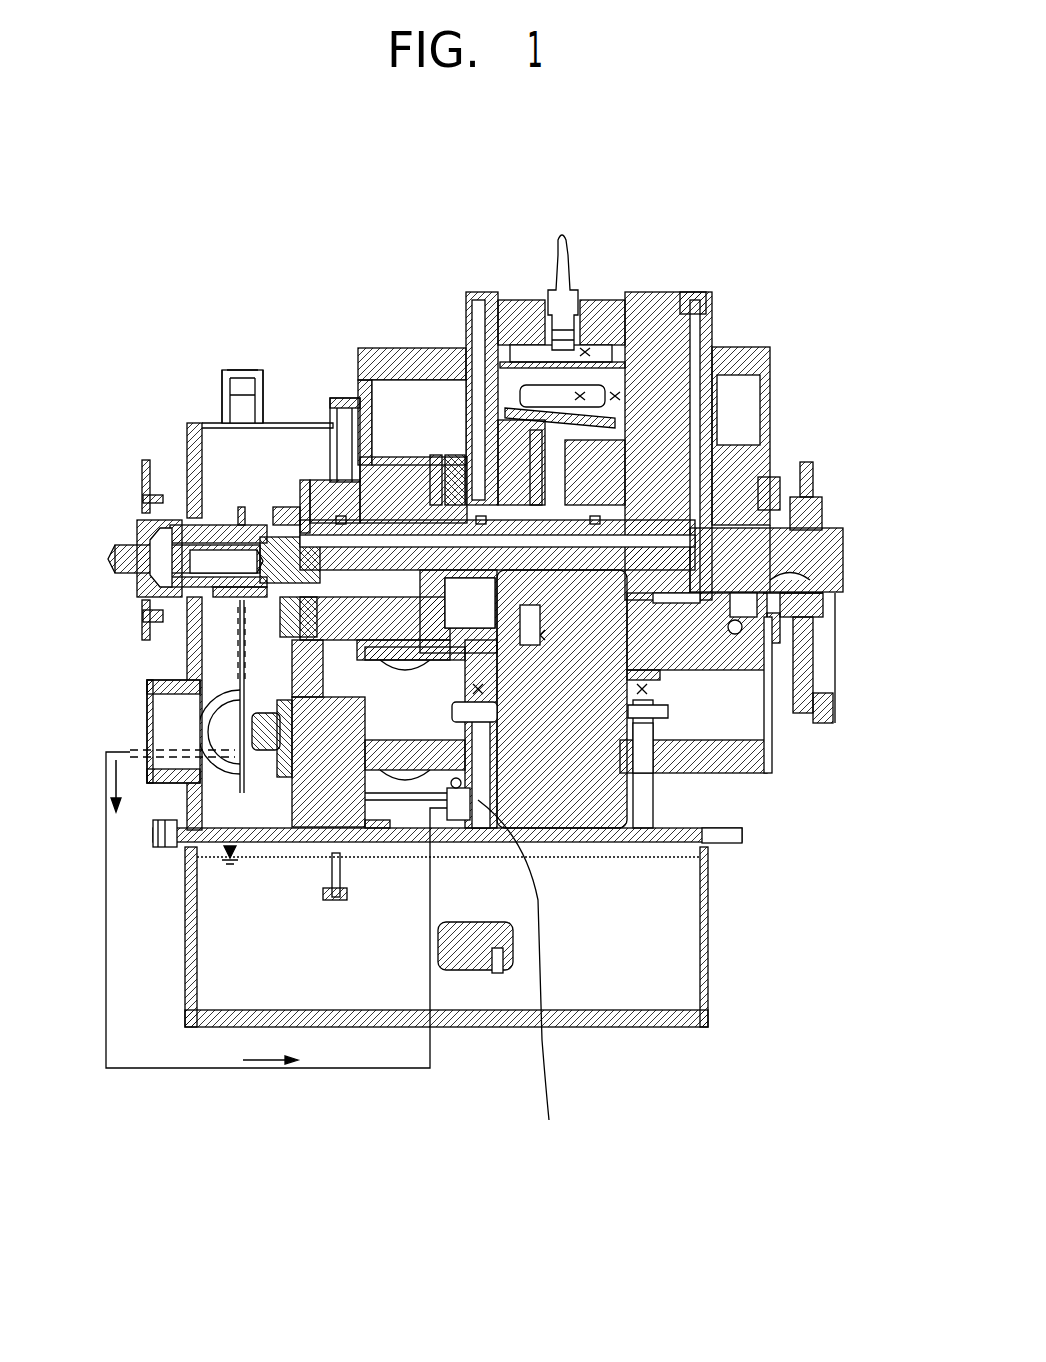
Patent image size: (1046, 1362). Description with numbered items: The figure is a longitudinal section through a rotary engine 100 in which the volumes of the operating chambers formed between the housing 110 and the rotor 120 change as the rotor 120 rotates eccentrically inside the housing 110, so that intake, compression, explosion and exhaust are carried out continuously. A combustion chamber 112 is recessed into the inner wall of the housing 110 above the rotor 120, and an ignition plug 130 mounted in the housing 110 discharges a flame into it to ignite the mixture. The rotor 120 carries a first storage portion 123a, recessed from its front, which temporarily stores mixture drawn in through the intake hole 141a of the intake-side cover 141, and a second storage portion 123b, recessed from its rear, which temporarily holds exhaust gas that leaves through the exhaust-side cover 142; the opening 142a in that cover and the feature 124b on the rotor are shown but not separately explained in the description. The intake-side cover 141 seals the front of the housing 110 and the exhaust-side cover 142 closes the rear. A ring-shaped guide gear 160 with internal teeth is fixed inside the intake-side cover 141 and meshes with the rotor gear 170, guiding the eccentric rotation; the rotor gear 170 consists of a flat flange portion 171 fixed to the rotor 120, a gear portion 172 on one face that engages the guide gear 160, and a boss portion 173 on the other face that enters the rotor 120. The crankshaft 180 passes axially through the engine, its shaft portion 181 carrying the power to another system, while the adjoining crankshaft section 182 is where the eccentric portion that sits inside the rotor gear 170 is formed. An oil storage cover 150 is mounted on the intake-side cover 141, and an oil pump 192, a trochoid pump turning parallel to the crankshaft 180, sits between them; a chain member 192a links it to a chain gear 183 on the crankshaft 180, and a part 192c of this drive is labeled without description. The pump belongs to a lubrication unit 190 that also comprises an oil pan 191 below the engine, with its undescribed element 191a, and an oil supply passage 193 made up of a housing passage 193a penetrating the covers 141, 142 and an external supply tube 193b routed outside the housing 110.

The rotary engine 100 is at (234, 285).
The housing 110 is at (617, 752).
The combustion chamber 112 is at (586, 350).
The rotor 120 is at (673, 558).
The first storage portion 123a is at (613, 598).
The second storage portion 123b is at (620, 397).
The oil hole 124b is at (582, 396).
The ignition plug 130 is at (563, 233).
The intake-side cover 141 is at (382, 352).
The intake hole 141a is at (548, 636).
The exhaust-side cover 142 is at (668, 297).
The sub frame oil passage 142a is at (485, 688).
The oil storage cover 150 is at (187, 440).
The guide gear 160 is at (455, 470).
The rotor gear 170 is at (547, 193).
The flange portion 171 is at (470, 480).
The gear portion 172 is at (436, 470).
The boss portion 173 is at (536, 450).
The crankshaft 180 is at (366, 505).
The shaft portion 181 is at (340, 525).
The pump cover 182 is at (700, 570).
The chain gear 183 is at (391, 505).
The lubrication unit 190 is at (97, 847).
The oil pan 191 is at (702, 1020).
The oil outlet 191a is at (440, 947).
The oil pump 192 is at (203, 733).
The chain member 192a is at (237, 660).
The connecting pipe 192c is at (222, 520).
The oil supply passage 193 is at (574, 1153).
The housing passage 193a is at (526, 976).
The supply tube 193b is at (403, 1070).